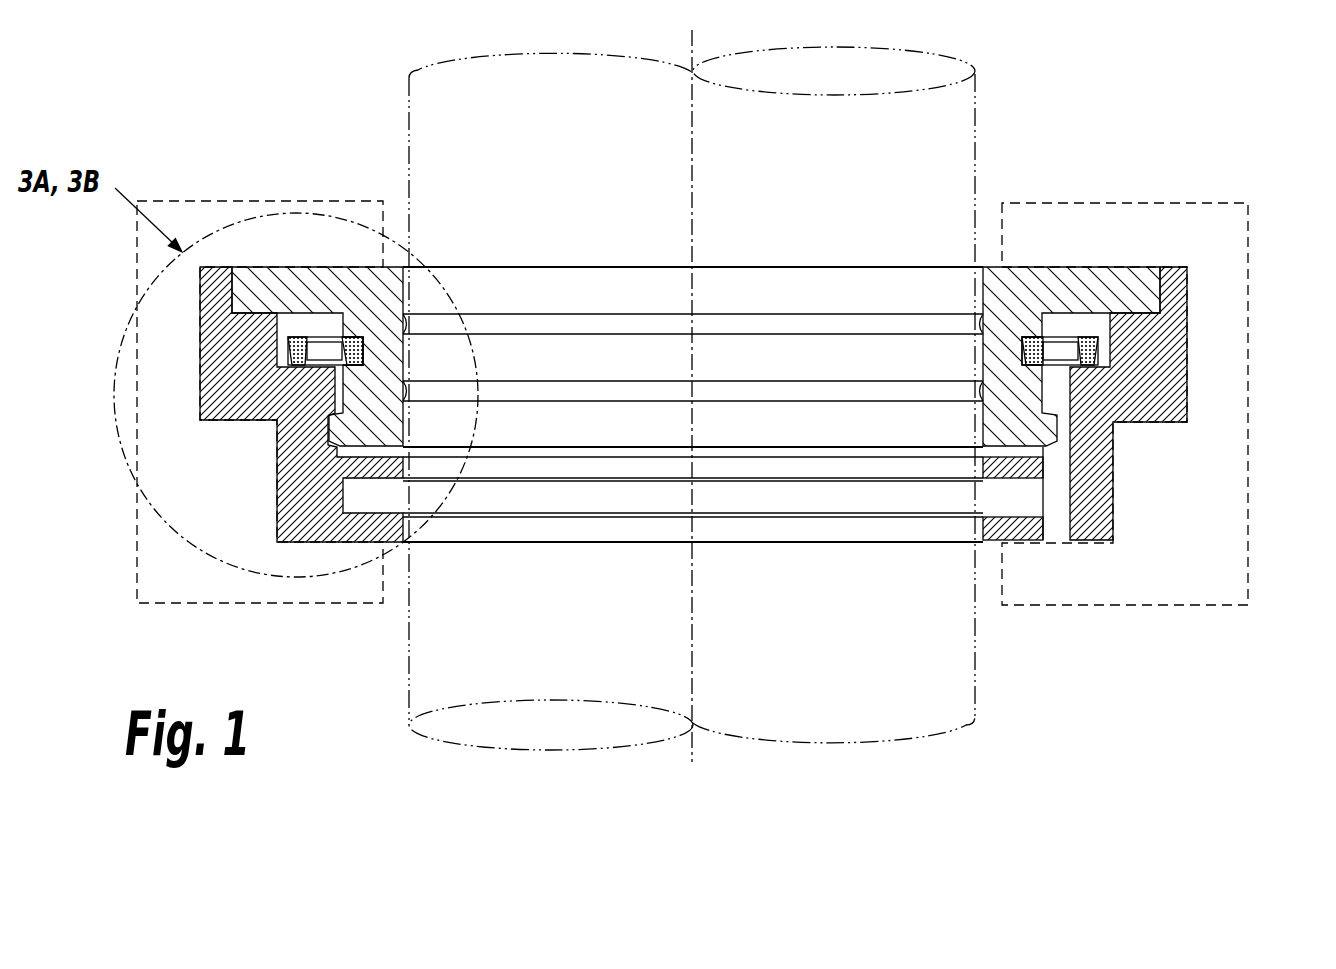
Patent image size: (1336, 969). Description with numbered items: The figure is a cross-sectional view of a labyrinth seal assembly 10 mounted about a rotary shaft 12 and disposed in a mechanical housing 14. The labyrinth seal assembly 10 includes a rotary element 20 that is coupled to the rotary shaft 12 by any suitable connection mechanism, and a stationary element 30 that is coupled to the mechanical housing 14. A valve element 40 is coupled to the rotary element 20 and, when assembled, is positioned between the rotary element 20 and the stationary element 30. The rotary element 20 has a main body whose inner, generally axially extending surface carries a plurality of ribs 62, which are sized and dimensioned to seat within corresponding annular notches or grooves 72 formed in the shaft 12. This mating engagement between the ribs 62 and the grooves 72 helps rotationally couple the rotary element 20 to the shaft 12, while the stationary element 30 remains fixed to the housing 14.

The labyrinth seal assembly 10 is at (675, 335).
The rotary shaft 12 is at (976, 104).
The mechanical housing 14 is at (240, 201).
The rotary element 20 is at (294, 262).
The stationary element 30 is at (192, 343).
The valve element 40 is at (322, 332).
The ribs 62 is at (410, 318).
The grooves 72 is at (577, 320).